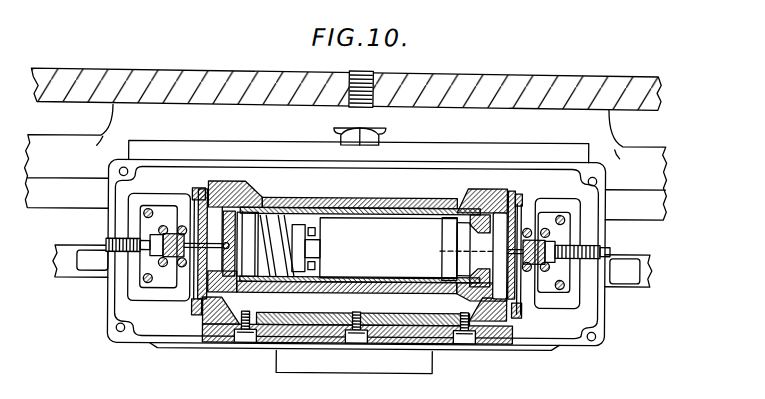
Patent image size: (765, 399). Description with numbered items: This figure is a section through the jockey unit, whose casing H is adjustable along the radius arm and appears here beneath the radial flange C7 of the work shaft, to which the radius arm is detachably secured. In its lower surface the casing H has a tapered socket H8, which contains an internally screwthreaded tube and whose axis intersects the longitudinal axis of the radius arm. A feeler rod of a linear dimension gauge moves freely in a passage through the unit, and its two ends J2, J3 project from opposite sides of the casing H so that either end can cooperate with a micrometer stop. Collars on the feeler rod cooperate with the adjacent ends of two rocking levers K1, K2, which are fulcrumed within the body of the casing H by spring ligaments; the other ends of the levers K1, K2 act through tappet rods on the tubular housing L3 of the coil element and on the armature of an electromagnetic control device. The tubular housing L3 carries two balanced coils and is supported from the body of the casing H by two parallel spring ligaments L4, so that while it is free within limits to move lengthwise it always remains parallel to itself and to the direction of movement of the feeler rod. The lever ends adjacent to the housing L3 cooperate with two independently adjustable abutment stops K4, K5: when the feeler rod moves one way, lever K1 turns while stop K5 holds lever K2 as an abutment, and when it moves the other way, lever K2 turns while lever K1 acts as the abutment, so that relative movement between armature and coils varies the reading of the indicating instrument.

The radial flange C7 is at (440, 79).
The jockey unit casing H is at (113, 310).
The tapered socket H8 is at (333, 359).
The end of feeler rod J2 is at (615, 270).
The end of feeler rod J3 is at (100, 269).
The rocking lever K1 is at (540, 229).
The rocking lever K2 is at (172, 237).
The adjustable abutment stop K4 is at (562, 241).
The adjustable abutment stop K5 is at (143, 243).
The tubular housing L3 is at (400, 290).
The spring ligaments L4 is at (200, 281).